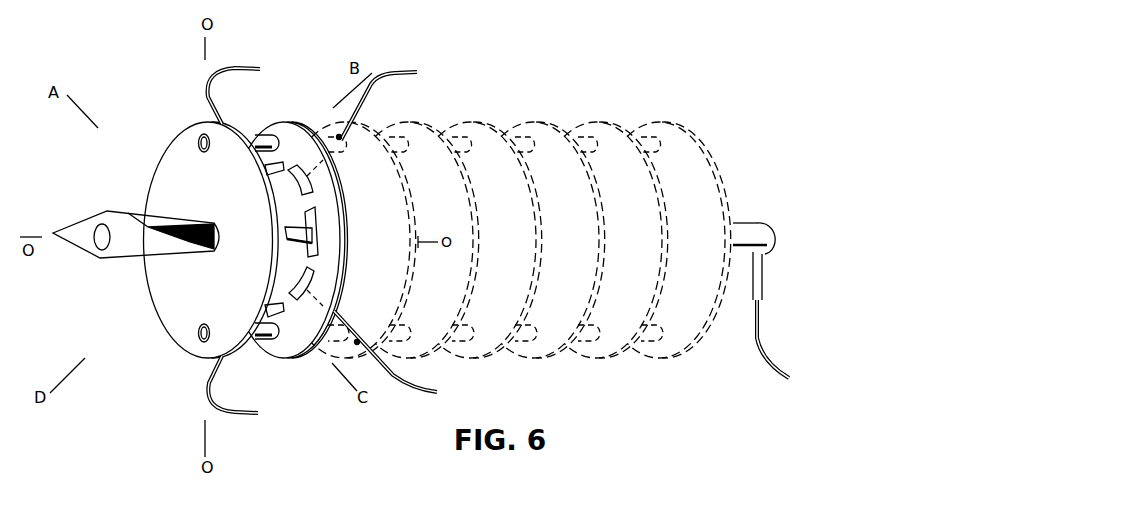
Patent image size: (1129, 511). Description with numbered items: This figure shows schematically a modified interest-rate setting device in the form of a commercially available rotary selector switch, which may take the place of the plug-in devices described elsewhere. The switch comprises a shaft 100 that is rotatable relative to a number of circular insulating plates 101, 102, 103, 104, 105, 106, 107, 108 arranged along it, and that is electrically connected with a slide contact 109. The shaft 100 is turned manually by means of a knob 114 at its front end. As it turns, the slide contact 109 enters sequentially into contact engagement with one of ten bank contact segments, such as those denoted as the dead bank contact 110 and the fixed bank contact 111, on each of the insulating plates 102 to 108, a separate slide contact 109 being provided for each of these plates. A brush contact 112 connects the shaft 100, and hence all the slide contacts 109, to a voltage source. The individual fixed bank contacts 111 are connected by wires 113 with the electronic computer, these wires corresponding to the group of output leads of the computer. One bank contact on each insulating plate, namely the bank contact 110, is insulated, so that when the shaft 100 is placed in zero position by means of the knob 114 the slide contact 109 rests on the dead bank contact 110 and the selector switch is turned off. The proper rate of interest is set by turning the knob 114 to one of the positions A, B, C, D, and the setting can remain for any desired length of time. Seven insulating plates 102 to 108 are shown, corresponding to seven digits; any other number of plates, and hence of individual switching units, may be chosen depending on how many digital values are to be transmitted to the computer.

The shaft 100 is at (97, 238).
The circular insulating plate 101 is at (186, 133).
The circular insulating plate 102 is at (290, 138).
The circular insulating plate 103 is at (363, 140).
The circular insulating plate 104 is at (422, 135).
The circular insulating plate 105 is at (470, 133).
The circular insulating plate 106 is at (545, 124).
The circular insulating plate 107 is at (597, 125).
The circular insulating plate 108 is at (666, 125).
The slide contact 109 is at (290, 228).
The dead bank contact 110 is at (320, 222).
The fixed bank contact 111 is at (315, 280).
The brush contact 112 is at (765, 253).
The wires 113 is at (387, 77).
The knob 114 is at (163, 226).